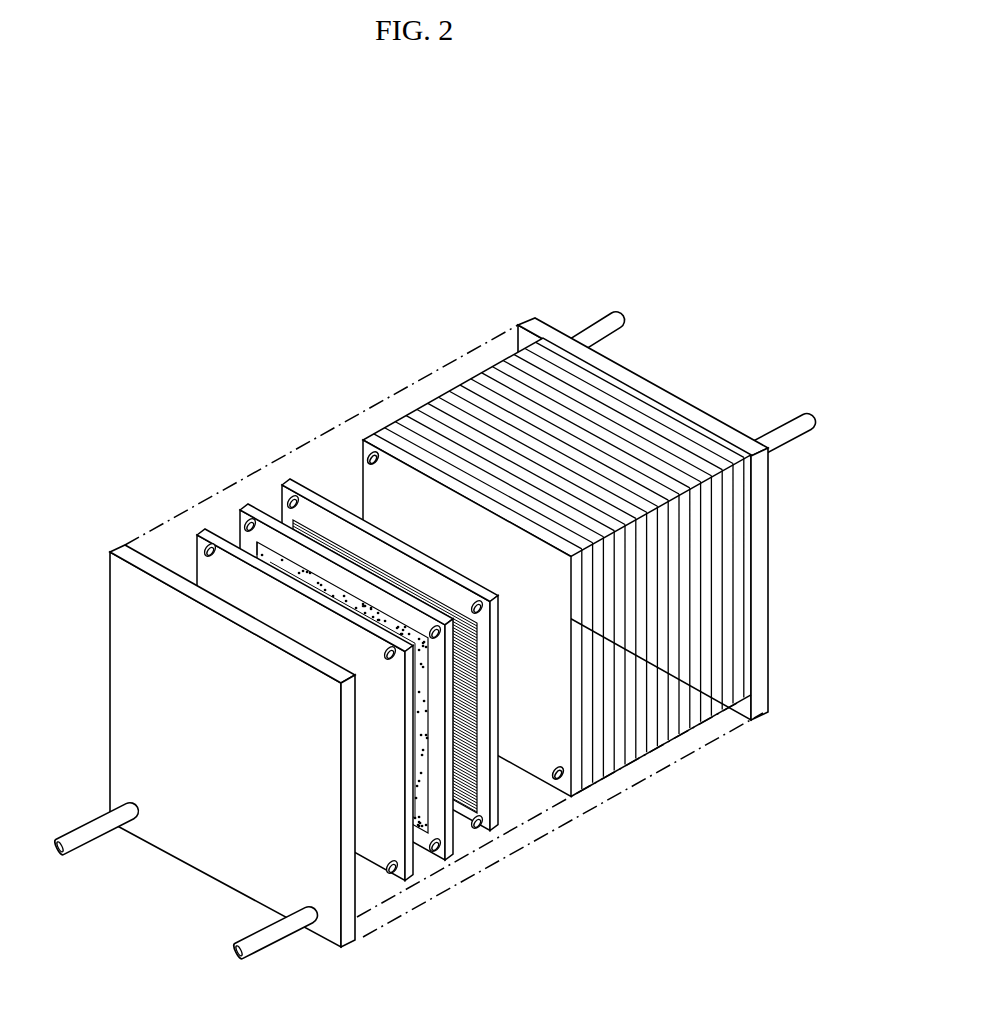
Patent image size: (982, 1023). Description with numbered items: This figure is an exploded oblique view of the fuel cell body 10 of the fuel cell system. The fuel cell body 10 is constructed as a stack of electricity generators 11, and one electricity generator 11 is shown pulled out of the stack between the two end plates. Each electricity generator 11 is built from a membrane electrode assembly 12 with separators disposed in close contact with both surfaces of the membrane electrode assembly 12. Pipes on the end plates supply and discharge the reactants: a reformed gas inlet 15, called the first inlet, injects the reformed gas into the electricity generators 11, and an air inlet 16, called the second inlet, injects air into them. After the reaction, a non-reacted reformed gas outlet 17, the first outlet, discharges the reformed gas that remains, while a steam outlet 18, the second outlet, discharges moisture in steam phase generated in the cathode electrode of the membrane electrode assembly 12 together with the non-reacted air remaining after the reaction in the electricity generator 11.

The fuel cell body 10 is at (338, 364).
The electricity generator 11 is at (385, 714).
The membrane electrode assembly 12 is at (457, 860).
The reformed gas inlet 15 is at (598, 312).
The air inlet 16 is at (792, 422).
The non-reacted reformed gas outlet 17 is at (260, 947).
The steam outlet 18 is at (73, 837).